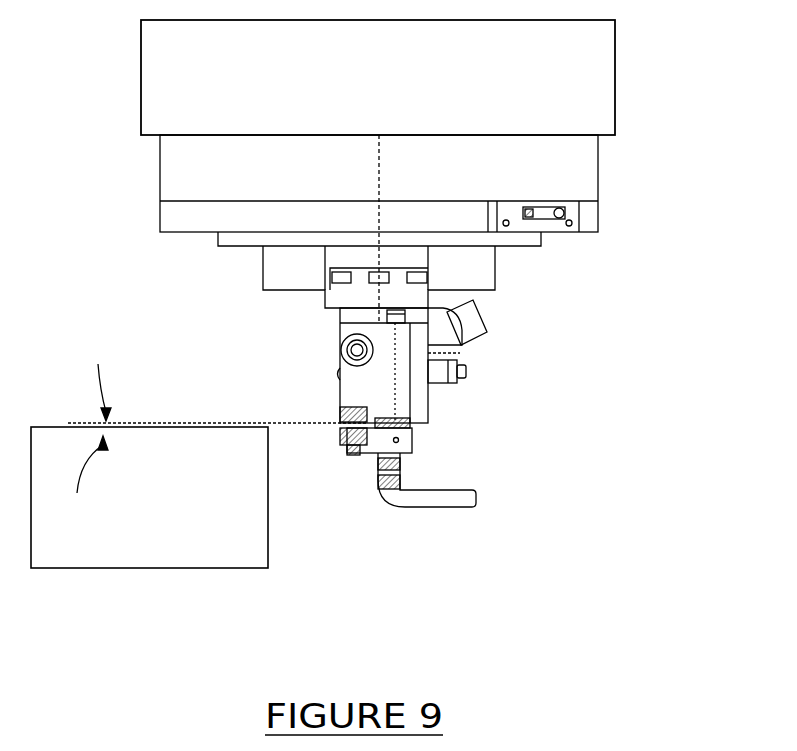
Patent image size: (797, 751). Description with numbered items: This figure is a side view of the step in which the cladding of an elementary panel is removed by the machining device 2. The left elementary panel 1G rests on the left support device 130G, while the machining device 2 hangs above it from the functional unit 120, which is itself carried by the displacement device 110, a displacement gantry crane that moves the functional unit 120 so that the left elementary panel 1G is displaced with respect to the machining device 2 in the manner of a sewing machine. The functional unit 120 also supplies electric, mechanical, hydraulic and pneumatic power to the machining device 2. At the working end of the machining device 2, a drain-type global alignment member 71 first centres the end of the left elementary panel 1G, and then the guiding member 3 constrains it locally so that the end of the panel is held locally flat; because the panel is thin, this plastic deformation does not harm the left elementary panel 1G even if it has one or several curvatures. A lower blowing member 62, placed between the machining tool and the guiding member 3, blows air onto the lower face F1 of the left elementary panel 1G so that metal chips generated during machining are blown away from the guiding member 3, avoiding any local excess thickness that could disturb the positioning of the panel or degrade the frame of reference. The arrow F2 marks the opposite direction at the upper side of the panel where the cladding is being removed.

The displacement device 110 is at (615, 80).
The functional unit 120 is at (590, 186).
The machining device 2 is at (518, 396).
The guiding member 3 is at (350, 473).
The global alignment member 71 is at (345, 432).
The lower blowing member 62 is at (445, 507).
The left elementary panel 1G is at (135, 421).
The left support device 130G is at (158, 568).
The lower face F1 is at (83, 480).
The second force direction F2 is at (97, 381).